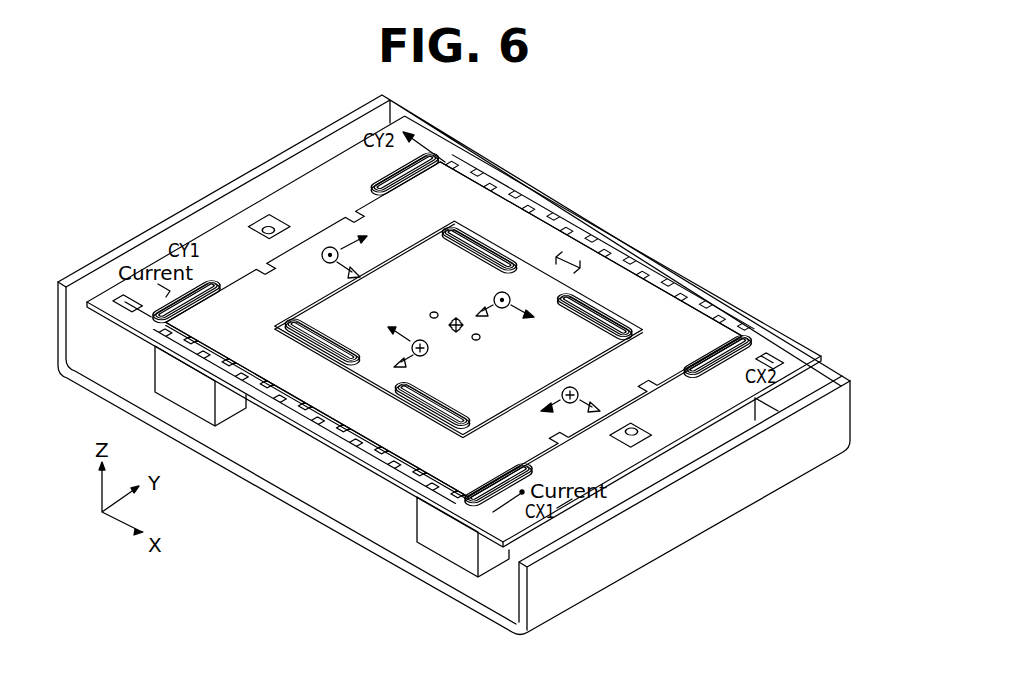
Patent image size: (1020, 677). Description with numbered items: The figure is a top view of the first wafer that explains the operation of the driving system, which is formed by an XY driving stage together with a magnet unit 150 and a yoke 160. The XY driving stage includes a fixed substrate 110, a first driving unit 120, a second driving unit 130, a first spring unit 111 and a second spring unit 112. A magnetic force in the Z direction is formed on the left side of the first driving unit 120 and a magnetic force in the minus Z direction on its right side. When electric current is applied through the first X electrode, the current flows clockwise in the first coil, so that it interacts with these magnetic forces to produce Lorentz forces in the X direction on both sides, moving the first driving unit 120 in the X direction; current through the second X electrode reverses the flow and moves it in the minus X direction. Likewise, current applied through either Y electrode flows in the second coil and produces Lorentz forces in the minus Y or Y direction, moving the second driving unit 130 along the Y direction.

The fixed substrate 110 is at (781, 333).
The first spring unit 111 is at (727, 333).
The second spring unit 112 is at (590, 292).
The first driving unit 120 is at (652, 290).
The second driving unit 130 is at (458, 221).
The magnet unit 150 is at (428, 544).
The yoke 160 is at (850, 385).